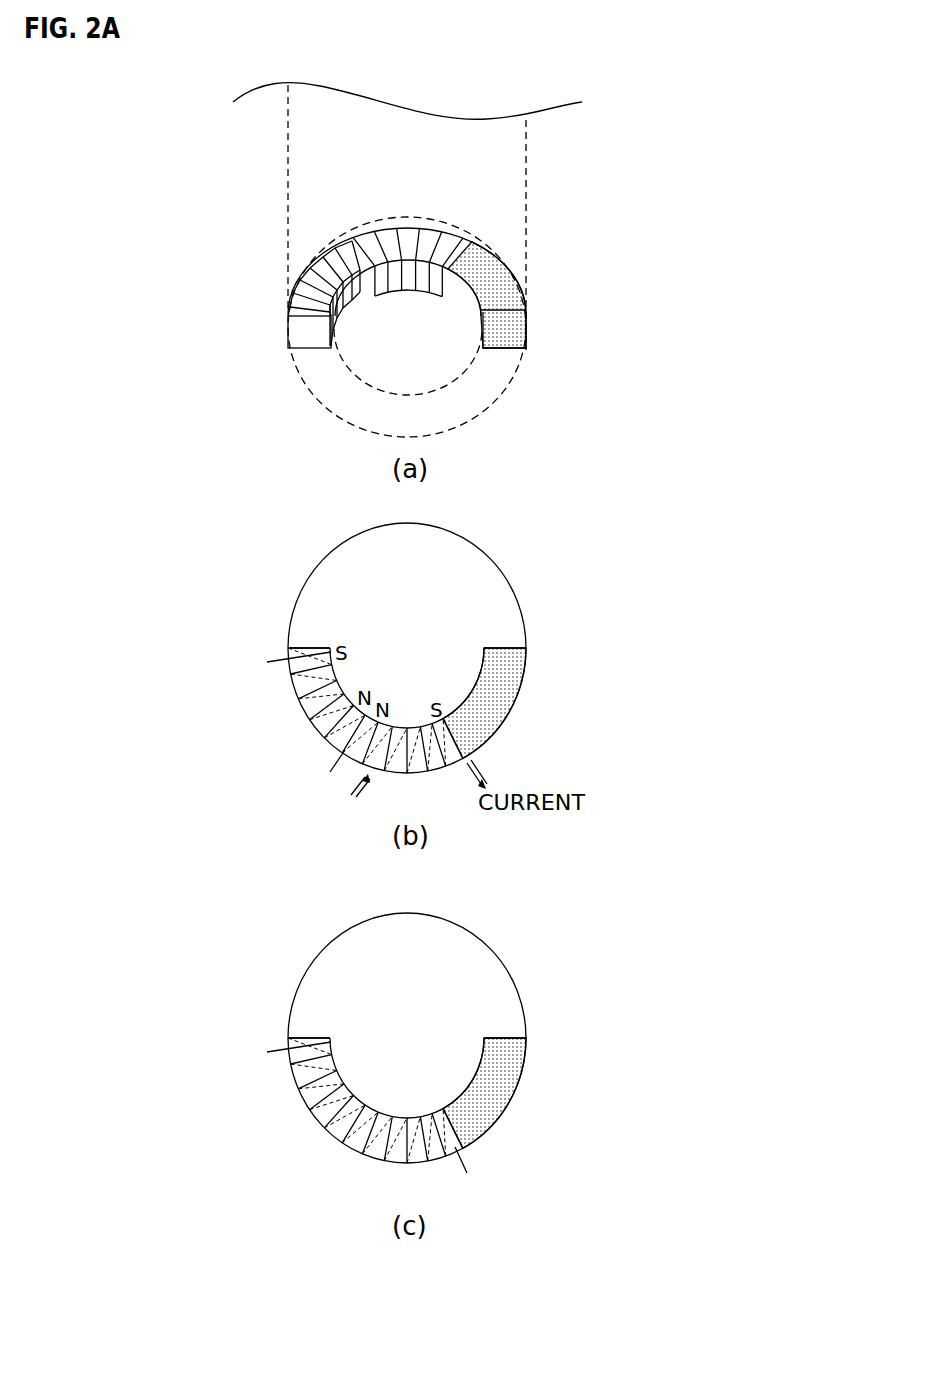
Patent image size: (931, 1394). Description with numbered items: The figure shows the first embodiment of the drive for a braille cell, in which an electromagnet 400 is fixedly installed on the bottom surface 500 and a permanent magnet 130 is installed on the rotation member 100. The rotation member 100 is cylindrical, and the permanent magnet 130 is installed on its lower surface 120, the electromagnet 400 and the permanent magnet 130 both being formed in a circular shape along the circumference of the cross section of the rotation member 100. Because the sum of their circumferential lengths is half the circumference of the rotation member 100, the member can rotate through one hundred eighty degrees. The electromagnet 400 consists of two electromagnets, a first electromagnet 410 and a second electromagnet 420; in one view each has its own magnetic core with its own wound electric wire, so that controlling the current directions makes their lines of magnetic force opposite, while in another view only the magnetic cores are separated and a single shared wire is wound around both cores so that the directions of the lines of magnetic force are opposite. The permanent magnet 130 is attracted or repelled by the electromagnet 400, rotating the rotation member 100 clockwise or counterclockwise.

The rotation member 100 is at (288, 165).
The lower surface 120 is at (325, 608).
The permanent magnet 130 is at (497, 270).
The electromagnet 400 is at (345, 258).
The first electromagnet 410 is at (381, 786).
The second electromagnet 420 is at (288, 690).
The bottom surface 500 is at (295, 380).